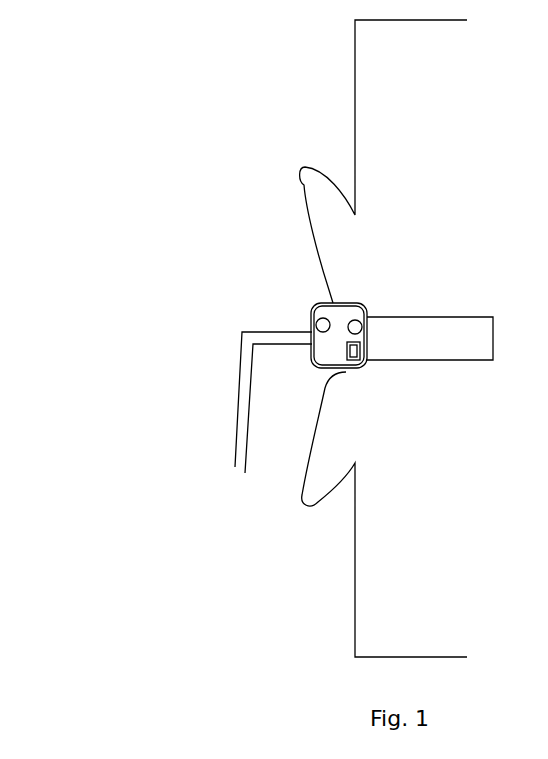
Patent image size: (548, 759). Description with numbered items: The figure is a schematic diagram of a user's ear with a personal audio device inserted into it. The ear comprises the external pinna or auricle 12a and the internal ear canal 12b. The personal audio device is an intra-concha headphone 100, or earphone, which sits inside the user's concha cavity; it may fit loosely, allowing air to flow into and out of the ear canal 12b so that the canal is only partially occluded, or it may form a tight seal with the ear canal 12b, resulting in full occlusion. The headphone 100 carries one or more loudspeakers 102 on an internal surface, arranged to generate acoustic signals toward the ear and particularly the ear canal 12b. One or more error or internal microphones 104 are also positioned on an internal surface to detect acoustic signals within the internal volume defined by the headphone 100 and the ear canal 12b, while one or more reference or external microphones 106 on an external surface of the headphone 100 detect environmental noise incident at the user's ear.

The intra-concha headphone 100 is at (166, 326).
The pinna 12a is at (304, 172).
The ear canal 12b is at (460, 348).
The loudspeaker 102 is at (366, 363).
The error microphone 104 is at (354, 320).
The reference microphone 106 is at (323, 318).